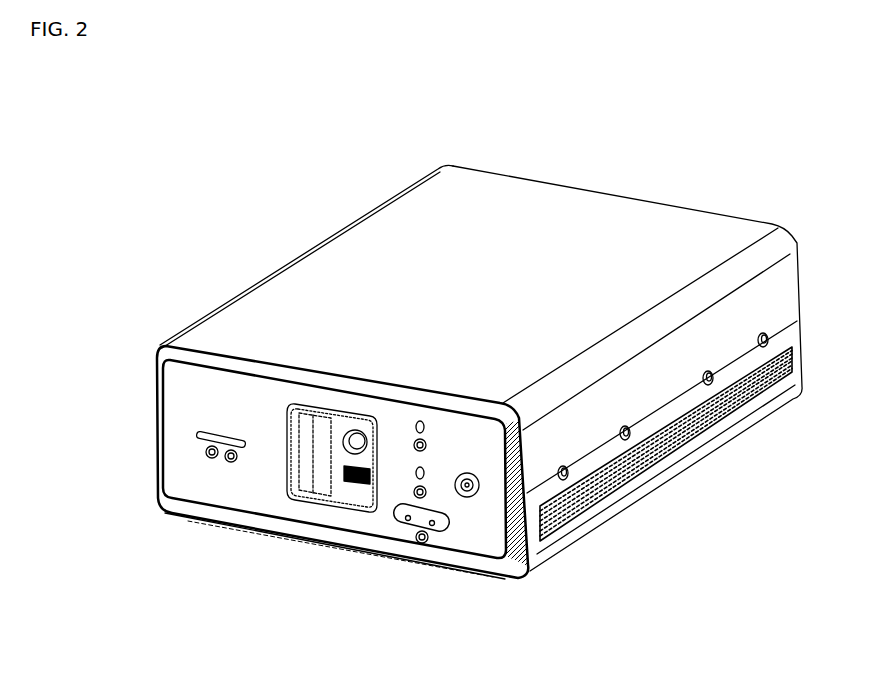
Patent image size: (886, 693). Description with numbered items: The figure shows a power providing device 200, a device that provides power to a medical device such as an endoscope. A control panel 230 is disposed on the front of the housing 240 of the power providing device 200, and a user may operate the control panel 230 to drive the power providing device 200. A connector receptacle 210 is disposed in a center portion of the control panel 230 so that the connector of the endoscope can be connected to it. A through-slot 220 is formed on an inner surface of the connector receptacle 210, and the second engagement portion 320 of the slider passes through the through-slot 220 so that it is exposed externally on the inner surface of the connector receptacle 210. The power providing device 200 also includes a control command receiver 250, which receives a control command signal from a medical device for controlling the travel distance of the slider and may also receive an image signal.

The power providing device 200 is at (158, 110).
The housing 240 is at (337, 240).
The control panel 230 is at (223, 405).
The second engagement portion 320 is at (327, 427).
The through-slot 220 is at (332, 470).
The control command receiver 250 is at (352, 483).
The connector receptacle 210 is at (425, 550).